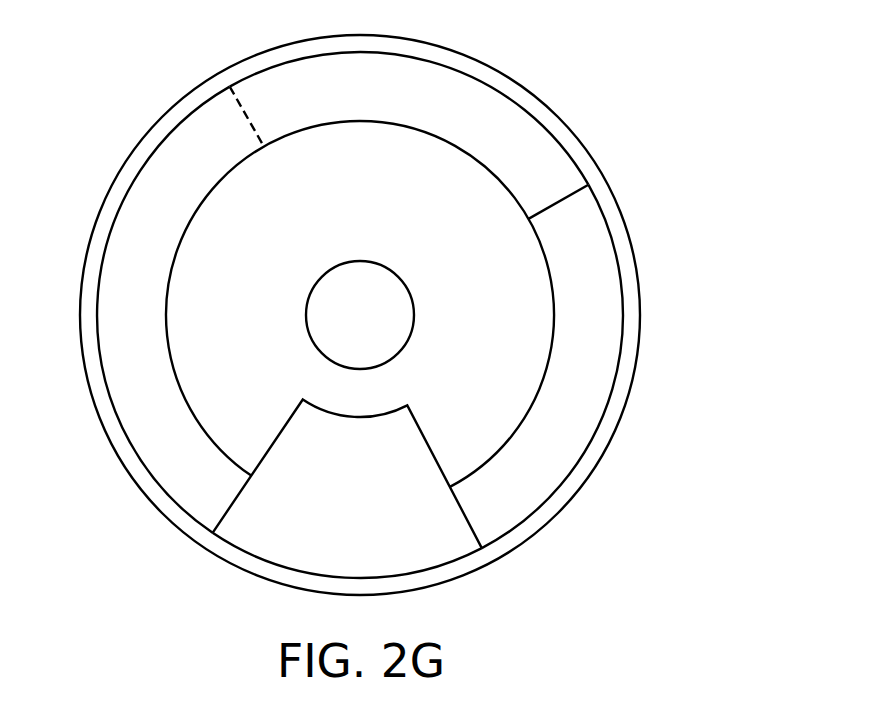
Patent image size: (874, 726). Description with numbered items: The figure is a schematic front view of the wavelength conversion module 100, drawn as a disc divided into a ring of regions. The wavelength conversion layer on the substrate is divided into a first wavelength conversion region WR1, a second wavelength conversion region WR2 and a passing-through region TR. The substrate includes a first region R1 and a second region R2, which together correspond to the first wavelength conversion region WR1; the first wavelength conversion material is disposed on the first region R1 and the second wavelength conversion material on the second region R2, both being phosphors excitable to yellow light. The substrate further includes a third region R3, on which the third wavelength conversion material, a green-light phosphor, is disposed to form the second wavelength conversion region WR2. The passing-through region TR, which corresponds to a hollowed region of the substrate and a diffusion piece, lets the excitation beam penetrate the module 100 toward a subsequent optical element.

The wavelength conversion module 100 is at (405, 305).
The first region R1 is at (178, 168).
The second region R2 is at (305, 88).
The third region R3 is at (592, 260).
The first wavelength conversion region WR1 is at (463, 105).
The second wavelength conversion region WR2 is at (593, 326).
The passing-through region TR is at (287, 522).